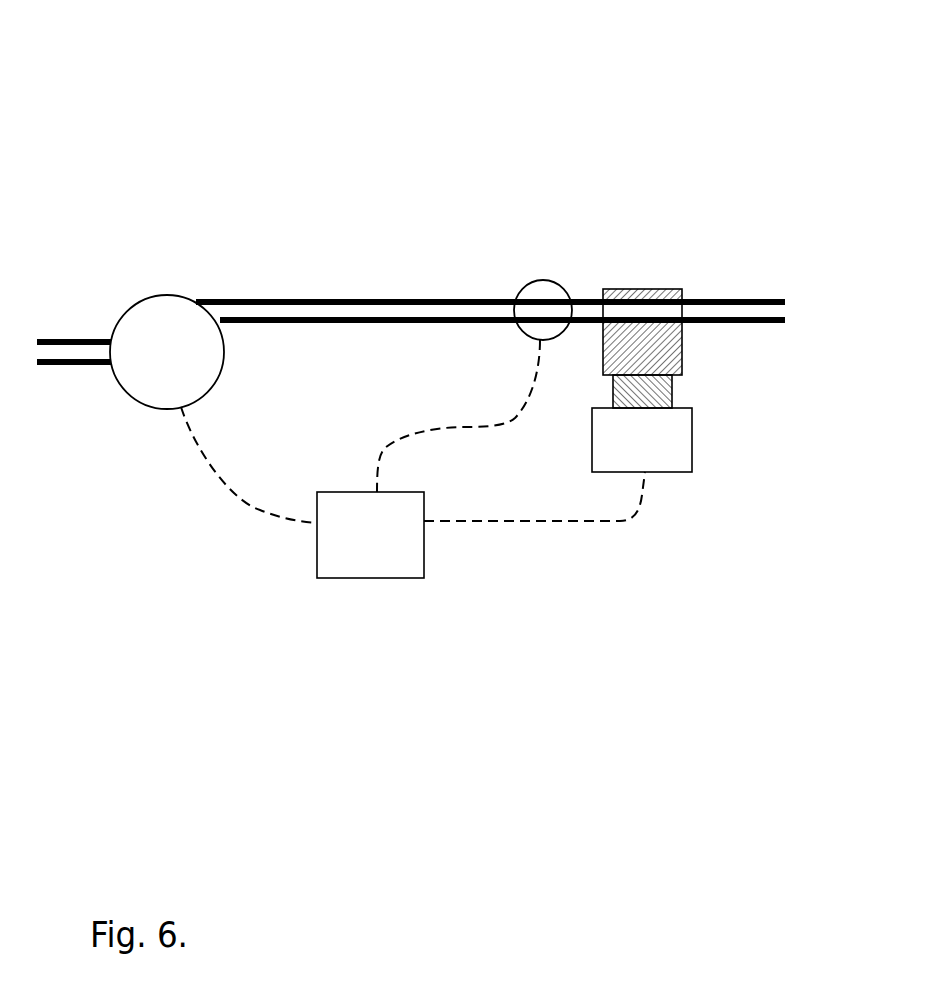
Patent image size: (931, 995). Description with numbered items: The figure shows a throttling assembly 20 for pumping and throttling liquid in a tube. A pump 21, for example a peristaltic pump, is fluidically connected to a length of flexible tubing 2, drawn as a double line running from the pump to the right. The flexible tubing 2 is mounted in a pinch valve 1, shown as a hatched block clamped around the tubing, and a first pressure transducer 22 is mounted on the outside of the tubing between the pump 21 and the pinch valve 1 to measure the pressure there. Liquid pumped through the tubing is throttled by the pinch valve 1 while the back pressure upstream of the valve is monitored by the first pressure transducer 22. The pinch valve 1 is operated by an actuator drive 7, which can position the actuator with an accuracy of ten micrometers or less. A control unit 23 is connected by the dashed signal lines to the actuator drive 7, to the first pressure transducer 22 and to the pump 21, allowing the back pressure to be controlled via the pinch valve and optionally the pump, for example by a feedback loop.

The throttling assembly 20 is at (445, 88).
The pump 21 is at (166, 296).
The flexible tubing 2 is at (398, 298).
The first pressure transducer 22 is at (538, 281).
The pinch valve 1 is at (704, 360).
The actuator drive 7 is at (692, 438).
The control unit 23 is at (316, 554).